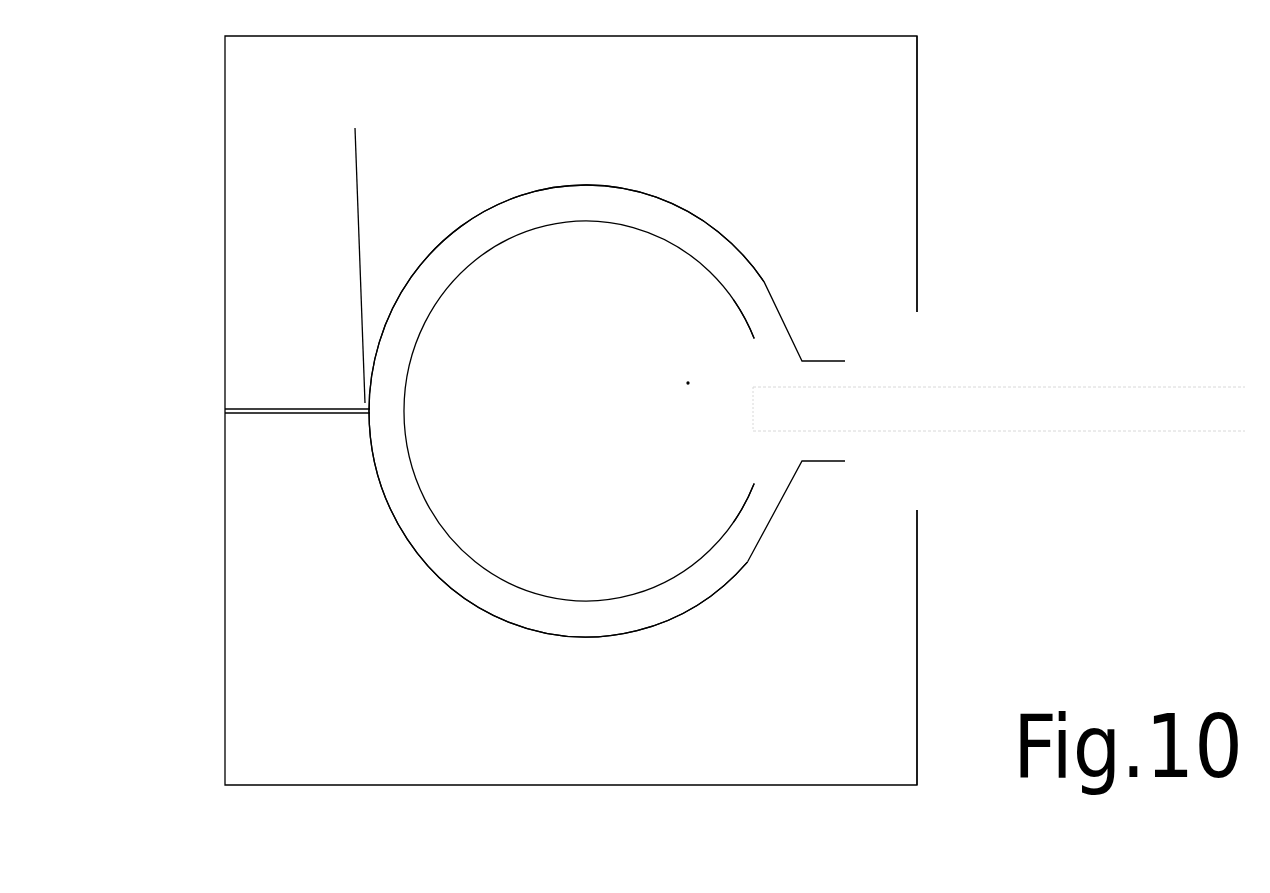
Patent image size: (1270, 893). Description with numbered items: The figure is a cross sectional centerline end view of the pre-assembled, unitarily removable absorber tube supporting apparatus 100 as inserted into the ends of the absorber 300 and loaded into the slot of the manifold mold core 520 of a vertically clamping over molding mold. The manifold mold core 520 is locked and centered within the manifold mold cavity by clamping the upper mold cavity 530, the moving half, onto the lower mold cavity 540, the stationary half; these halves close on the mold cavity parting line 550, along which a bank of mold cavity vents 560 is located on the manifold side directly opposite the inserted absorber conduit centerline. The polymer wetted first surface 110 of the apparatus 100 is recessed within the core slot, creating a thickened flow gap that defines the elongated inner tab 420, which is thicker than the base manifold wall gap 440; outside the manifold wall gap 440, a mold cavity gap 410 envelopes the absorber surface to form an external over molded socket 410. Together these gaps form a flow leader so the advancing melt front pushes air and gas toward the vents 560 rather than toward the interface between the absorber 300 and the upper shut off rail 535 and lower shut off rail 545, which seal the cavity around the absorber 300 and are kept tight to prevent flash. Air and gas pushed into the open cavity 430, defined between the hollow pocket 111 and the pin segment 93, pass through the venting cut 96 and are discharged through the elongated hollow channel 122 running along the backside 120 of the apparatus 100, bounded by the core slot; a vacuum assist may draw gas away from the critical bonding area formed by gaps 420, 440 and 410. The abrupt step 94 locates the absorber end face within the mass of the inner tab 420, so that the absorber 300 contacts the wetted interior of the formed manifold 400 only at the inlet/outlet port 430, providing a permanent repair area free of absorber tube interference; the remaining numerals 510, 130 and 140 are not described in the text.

The removable absorber tube supporting apparatus 100 is at (868, 412).
The absorber 300 is at (1052, 436).
The formed manifold 400 is at (566, 424).
The mold cavity gap (external elongated over molded socket) 410 is at (822, 372).
The thickened flow gap (elongated inner tab) 420 is at (750, 347).
The open cavity (inlet/outlet port) 430 is at (796, 577).
The base manifold wall gap 440 is at (764, 524).
The inner opening 510 is at (550, 468).
The manifold mold core 520 is at (680, 384).
The upper mold cavity (moving half) 530 is at (643, 191).
The lower mold cavity (stationary half) 540 is at (617, 633).
The upper mold cavity shut off rail 535 is at (882, 336).
The lower mold cavity shut off rail 545 is at (885, 472).
The mold cavity parting line 550 is at (335, 260).
The mold cavity vents 560 is at (274, 415).
The pin segment 93 is at (729, 437).
The abrupt step 94 is at (756, 405).
The venting cut 96 is at (703, 411).
The polymer wetted first surface 110 is at (745, 455).
The hollow pocket 111 is at (800, 649).
The backside 120 is at (682, 352).
The elongated hollow channel 122 is at (684, 426).
The upper contact point 130 is at (707, 344).
The lower contact point 140 is at (699, 479).